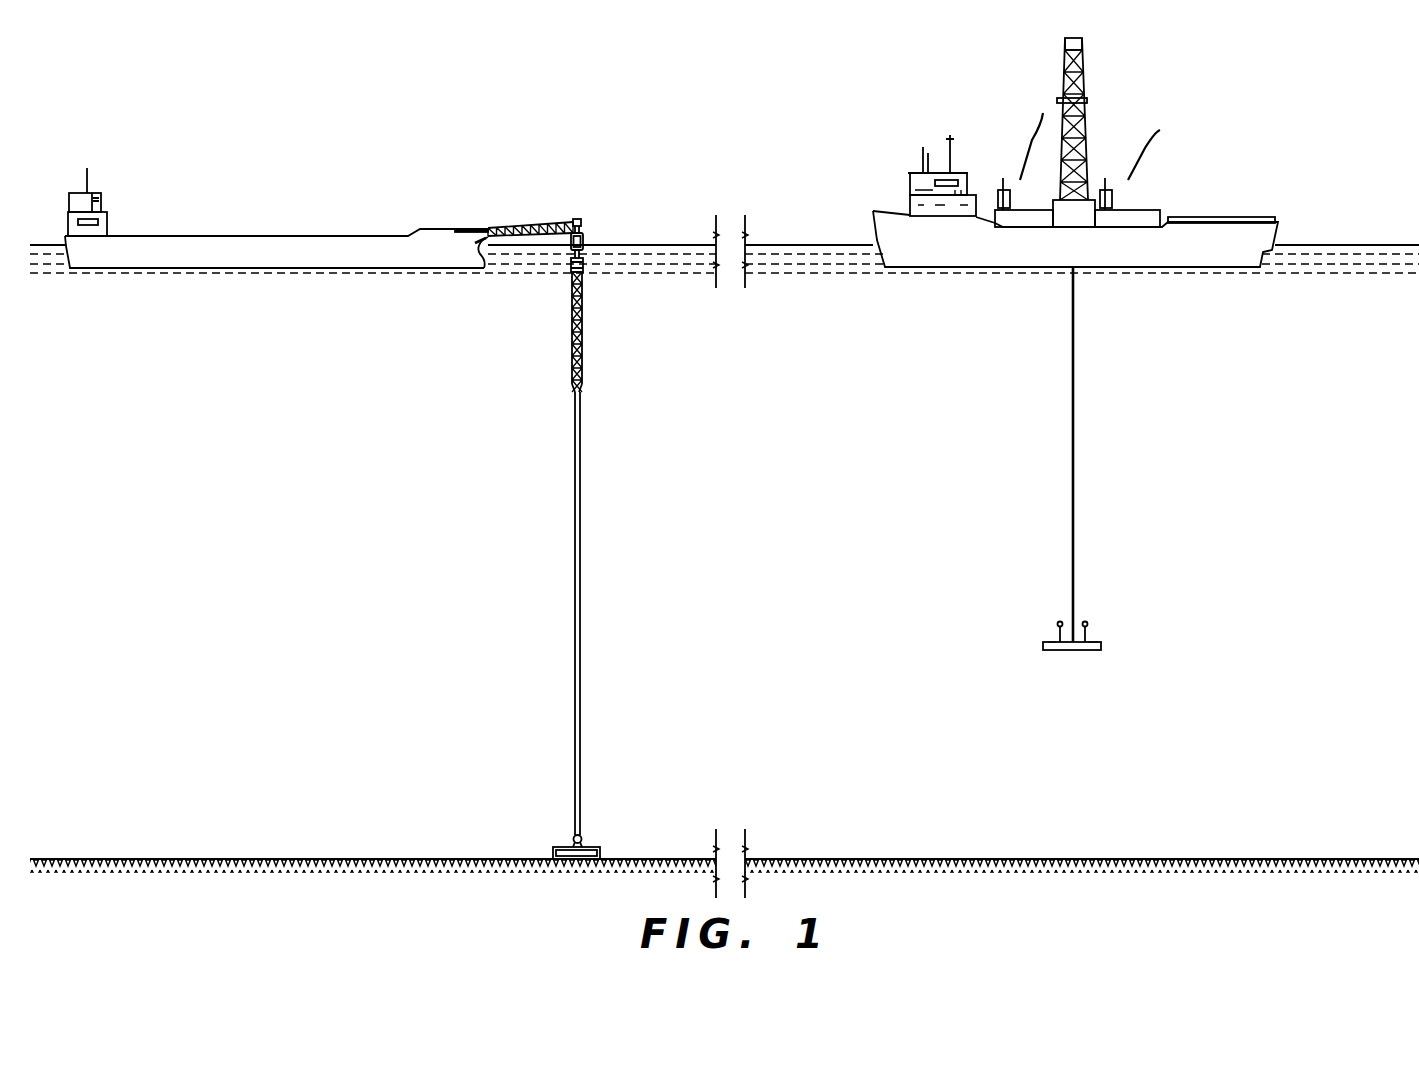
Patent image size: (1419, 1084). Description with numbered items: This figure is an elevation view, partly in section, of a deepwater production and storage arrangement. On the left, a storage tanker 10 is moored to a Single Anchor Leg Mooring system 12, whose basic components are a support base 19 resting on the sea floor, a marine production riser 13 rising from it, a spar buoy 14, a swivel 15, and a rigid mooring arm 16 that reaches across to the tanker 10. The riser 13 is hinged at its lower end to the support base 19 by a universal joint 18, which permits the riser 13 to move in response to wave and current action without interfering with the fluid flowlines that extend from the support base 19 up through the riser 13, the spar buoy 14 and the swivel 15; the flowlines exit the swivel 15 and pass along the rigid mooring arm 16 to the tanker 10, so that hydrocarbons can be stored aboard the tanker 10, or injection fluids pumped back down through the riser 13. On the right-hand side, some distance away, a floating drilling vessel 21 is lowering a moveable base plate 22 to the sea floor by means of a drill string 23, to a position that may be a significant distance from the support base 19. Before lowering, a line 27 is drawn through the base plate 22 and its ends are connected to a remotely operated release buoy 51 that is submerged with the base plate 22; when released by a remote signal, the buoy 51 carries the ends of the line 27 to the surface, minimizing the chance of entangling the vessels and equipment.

The storage tanker 10 is at (318, 257).
The Single Anchor Leg Mooring system 12 is at (612, 337).
The marine production riser 13 is at (573, 548).
The spar buoy 14 is at (572, 362).
The swivel 15 is at (583, 243).
The rigid mooring arm 16 is at (531, 227).
The universal joint 18 is at (583, 840).
The support base 19 is at (563, 848).
The floating drilling vessel 21 is at (1160, 257).
The moveable base plate 22 is at (1080, 650).
The drill string 23 is at (1071, 452).
The line 27 is at (1057, 640).
The remotely operated release buoy 51 is at (1085, 622).